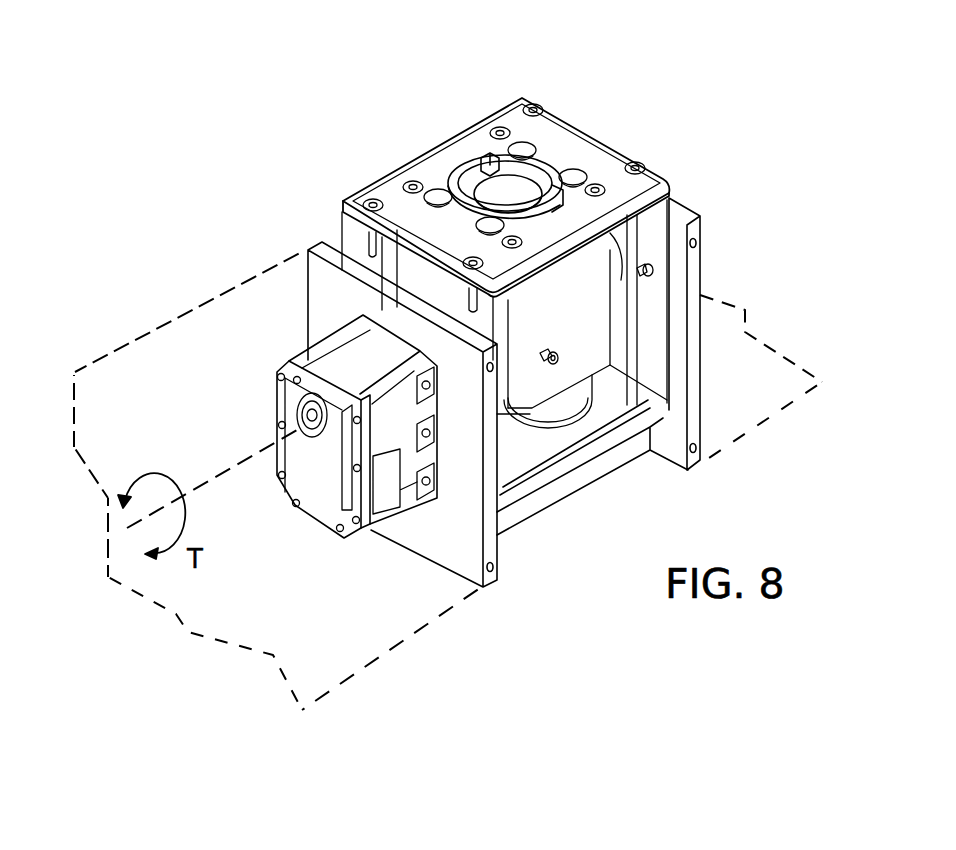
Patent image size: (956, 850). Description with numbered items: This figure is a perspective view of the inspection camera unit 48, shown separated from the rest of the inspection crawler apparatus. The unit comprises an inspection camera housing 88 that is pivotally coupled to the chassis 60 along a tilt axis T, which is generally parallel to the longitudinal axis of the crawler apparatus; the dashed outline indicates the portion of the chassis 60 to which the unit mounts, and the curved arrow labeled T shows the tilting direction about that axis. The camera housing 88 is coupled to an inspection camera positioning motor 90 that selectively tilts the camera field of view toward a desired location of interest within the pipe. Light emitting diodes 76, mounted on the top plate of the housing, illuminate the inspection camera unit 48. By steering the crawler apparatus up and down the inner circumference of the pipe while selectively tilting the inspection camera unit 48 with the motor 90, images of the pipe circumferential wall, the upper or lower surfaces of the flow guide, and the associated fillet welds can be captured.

The inspection camera unit 48 is at (320, 148).
The inspection camera housing 88 is at (440, 197).
The light emitting diodes 76 is at (492, 222).
The inspection camera positioning motor 90 is at (277, 396).
The chassis 60 is at (523, 518).